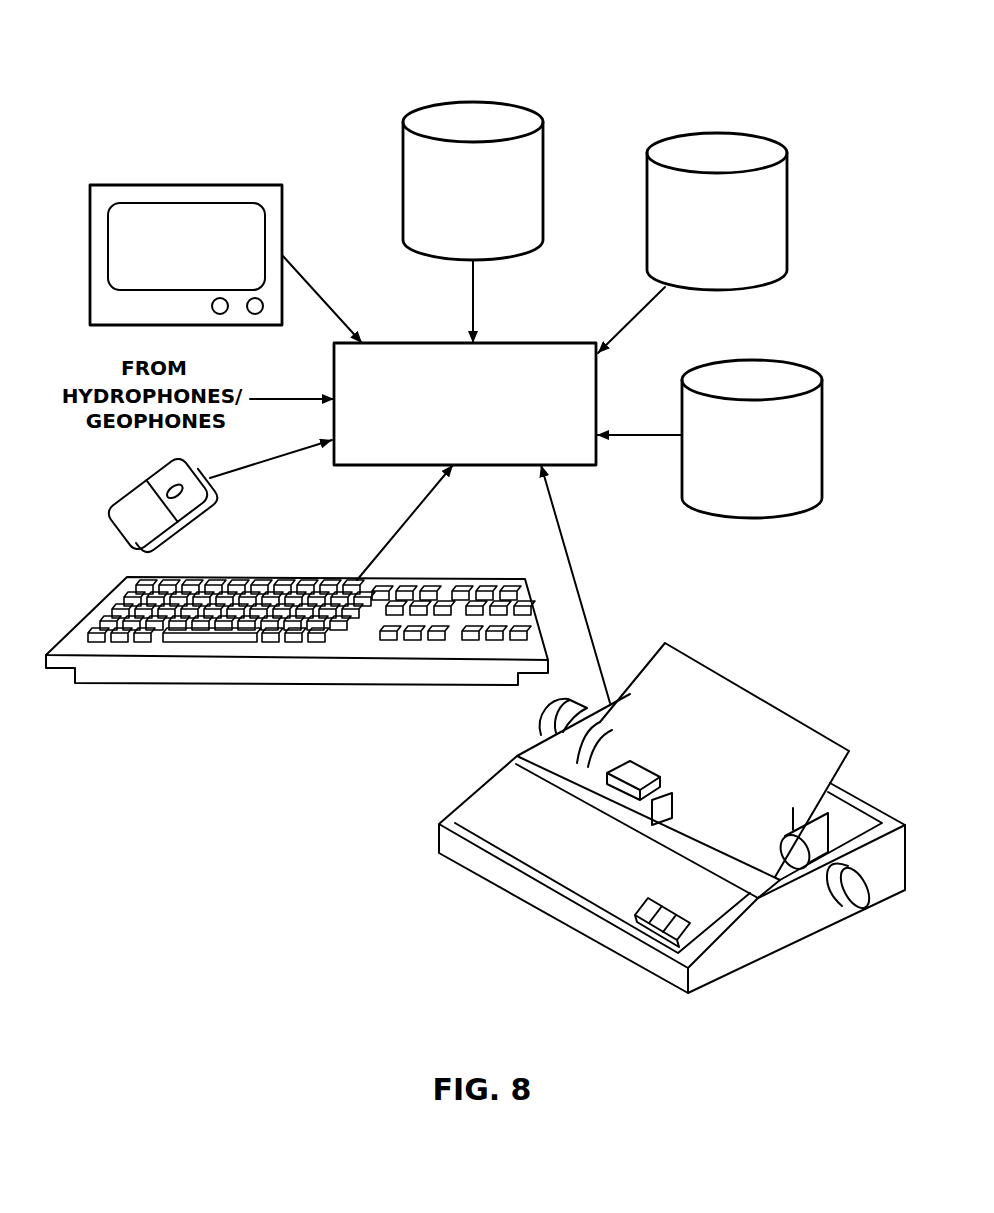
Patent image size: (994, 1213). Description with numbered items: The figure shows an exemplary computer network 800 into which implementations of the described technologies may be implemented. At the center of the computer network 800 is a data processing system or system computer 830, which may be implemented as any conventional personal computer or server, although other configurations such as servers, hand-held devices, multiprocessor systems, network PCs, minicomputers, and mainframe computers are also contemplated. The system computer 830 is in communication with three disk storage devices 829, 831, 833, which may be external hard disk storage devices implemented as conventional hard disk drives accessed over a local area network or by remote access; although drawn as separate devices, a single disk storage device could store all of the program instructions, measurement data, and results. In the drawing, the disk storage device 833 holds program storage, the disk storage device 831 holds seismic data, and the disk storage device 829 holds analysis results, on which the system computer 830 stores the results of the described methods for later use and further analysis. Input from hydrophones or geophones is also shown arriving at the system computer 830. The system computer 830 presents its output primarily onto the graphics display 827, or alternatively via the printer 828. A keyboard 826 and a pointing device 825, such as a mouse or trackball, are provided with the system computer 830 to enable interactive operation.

The computer network 800 is at (210, 70).
The pointing device 825 is at (137, 487).
The keyboard 826 is at (327, 682).
The graphics display 827 is at (212, 185).
The printer 828 is at (588, 937).
The disk storage device 829 is at (728, 360).
The system computer 830 is at (502, 340).
The disk storage device 831 is at (727, 132).
The disk storage device 833 is at (445, 102).